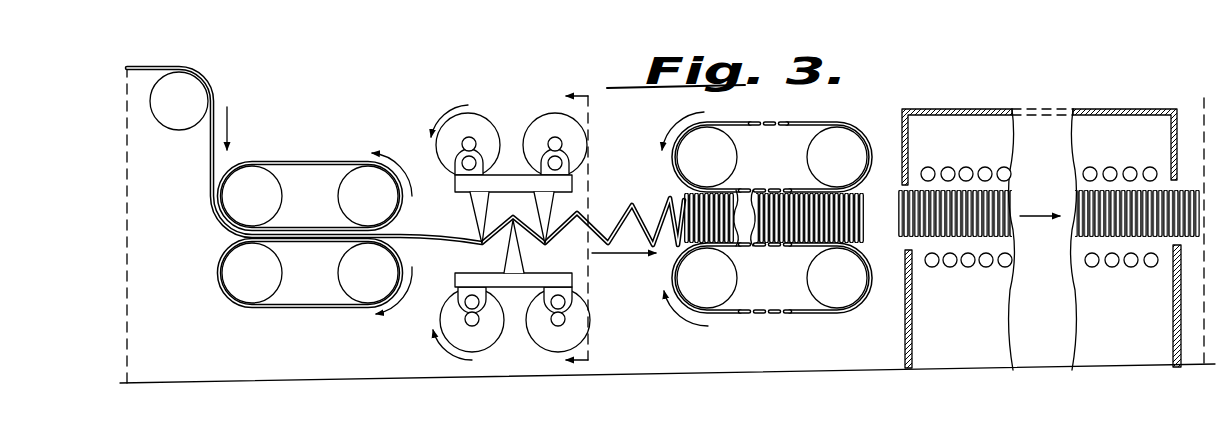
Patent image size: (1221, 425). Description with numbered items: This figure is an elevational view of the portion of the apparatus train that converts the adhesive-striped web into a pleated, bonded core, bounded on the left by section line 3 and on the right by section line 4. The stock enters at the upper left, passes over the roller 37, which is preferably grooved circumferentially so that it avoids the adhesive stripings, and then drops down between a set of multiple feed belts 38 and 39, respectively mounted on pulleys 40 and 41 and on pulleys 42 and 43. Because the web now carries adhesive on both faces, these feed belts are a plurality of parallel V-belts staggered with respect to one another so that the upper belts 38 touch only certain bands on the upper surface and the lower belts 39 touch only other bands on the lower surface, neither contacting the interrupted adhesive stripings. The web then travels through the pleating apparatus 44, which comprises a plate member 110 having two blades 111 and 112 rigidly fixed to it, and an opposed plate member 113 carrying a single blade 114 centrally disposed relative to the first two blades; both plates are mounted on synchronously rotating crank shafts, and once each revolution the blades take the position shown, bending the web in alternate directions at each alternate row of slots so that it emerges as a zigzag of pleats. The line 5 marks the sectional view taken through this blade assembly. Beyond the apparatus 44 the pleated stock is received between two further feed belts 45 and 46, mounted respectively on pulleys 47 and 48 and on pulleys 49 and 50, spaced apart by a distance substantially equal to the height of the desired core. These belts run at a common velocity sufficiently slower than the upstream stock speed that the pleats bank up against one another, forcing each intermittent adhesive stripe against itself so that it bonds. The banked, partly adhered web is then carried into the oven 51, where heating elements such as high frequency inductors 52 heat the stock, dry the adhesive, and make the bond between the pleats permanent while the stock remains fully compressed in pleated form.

The section line 3— 3 is at (123, 228).
The section line 4— 4 is at (1198, 235).
The line 5— 5 is at (568, 232).
The roller 37 is at (184, 129).
The feed belts 38 is at (292, 163).
The feed belts 39 is at (337, 307).
The pulley 40 is at (283, 199).
The pulley 41 is at (339, 207).
The pulley 42 is at (283, 276).
The pulley 43 is at (339, 278).
The pleating apparatus 44 is at (531, 226).
The plate member 110 is at (475, 184).
The blade 111 is at (472, 212).
The blade 112 is at (557, 204).
The plate member 113 is at (478, 273).
The blade 114 is at (519, 262).
The feed belt 45 is at (786, 123).
The feed belt 46 is at (807, 313).
The pulley 47 is at (739, 164).
The pulley 48 is at (807, 169).
The pulley 49 is at (741, 284).
The pulley 50 is at (807, 287).
The oven 51 is at (952, 108).
The high frequency inductors 52 is at (949, 168).